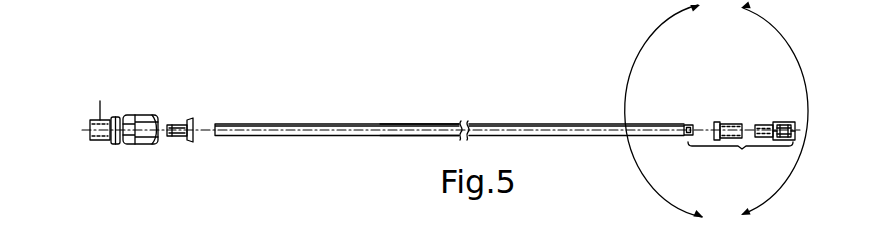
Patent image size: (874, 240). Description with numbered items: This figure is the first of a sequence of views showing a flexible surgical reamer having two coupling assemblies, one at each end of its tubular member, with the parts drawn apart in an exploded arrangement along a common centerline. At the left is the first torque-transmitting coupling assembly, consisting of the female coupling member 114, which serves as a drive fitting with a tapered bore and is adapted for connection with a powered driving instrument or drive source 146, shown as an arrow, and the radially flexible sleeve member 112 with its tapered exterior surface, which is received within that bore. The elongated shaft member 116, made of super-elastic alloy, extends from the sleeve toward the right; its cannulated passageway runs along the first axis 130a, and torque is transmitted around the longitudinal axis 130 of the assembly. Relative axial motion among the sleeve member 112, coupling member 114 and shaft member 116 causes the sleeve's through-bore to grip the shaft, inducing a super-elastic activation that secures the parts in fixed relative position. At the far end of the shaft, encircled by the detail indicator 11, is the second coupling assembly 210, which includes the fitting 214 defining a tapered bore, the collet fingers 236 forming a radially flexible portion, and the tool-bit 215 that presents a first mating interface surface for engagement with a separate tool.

The section line / detail view indicator 11 is at (716, 115).
The radially flexible sleeve member 112 is at (191, 119).
The female coupling member 114 is at (147, 115).
The elongated shaft member 116 is at (487, 112).
The longitudinal axis 130 is at (89, 130).
The first axis 130a is at (428, 128).
The drive source 146 is at (86, 101).
The second coupling assembly 210 is at (740, 160).
The fitting 214 is at (723, 110).
The tool-bit 215 is at (793, 110).
The collet fingers 236 is at (763, 124).